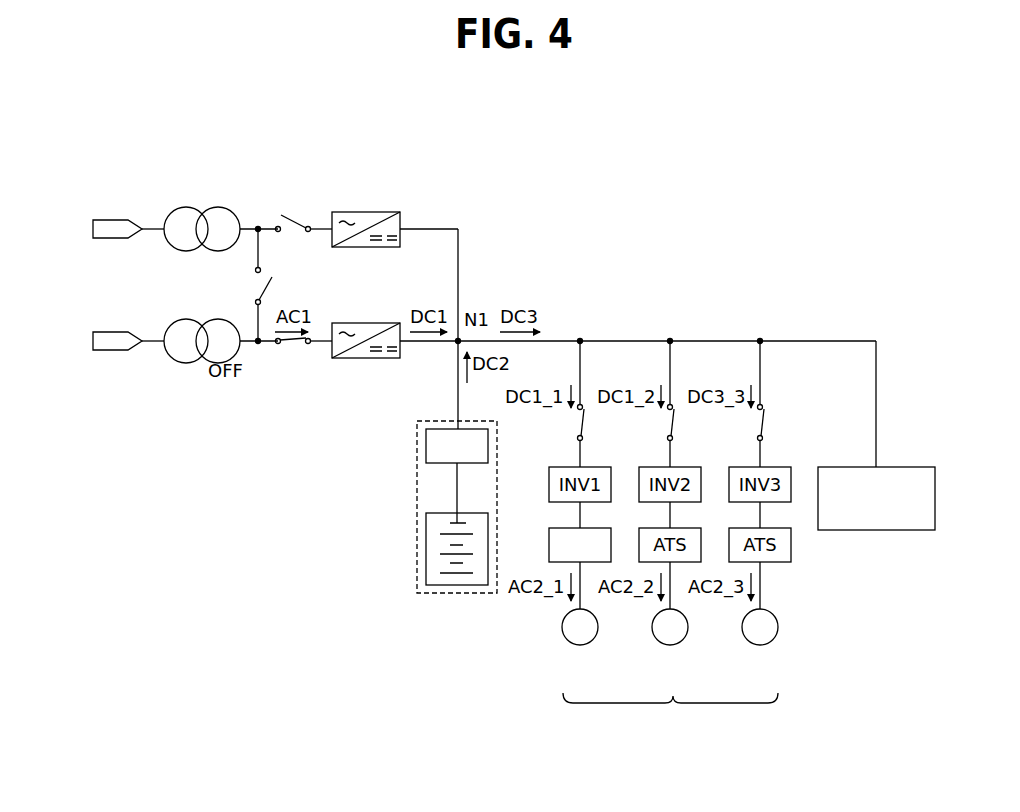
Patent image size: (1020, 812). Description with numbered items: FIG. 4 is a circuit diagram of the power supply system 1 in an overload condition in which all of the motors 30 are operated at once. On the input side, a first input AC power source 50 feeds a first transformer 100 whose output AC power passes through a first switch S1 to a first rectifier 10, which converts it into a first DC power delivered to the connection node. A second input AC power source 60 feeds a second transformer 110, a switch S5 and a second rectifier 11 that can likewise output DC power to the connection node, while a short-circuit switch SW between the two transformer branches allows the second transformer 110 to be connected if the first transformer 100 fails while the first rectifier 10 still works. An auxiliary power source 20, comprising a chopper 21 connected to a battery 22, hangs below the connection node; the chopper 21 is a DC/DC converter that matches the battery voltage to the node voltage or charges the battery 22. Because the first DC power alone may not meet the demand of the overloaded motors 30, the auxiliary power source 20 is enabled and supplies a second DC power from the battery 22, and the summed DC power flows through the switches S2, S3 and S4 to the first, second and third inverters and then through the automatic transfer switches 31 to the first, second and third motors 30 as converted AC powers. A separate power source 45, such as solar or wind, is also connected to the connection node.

The power supply system 1 is at (560, 119).
The first rectifier 10 is at (365, 321).
The second rectifier 11 is at (365, 210).
The auxiliary power source 20 is at (437, 536).
The chopper 21 is at (426, 444).
The battery 22 is at (426, 547).
The motors 30 is at (670, 714).
The automatic transfer switch 31 is at (548, 544).
The power source 45 is at (876, 530).
The first input AC power source 50 is at (110, 327).
The second input AC power source 60 is at (110, 215).
The first transformer 100 is at (183, 319).
The second transformer 110 is at (183, 207).
The first switch S1 is at (293, 353).
The second switch S2 is at (594, 423).
The third switch S3 is at (684, 423).
The switch S4 is at (774, 423).
The switch S5 is at (293, 236).
The short-circuit switch SW is at (247, 286).